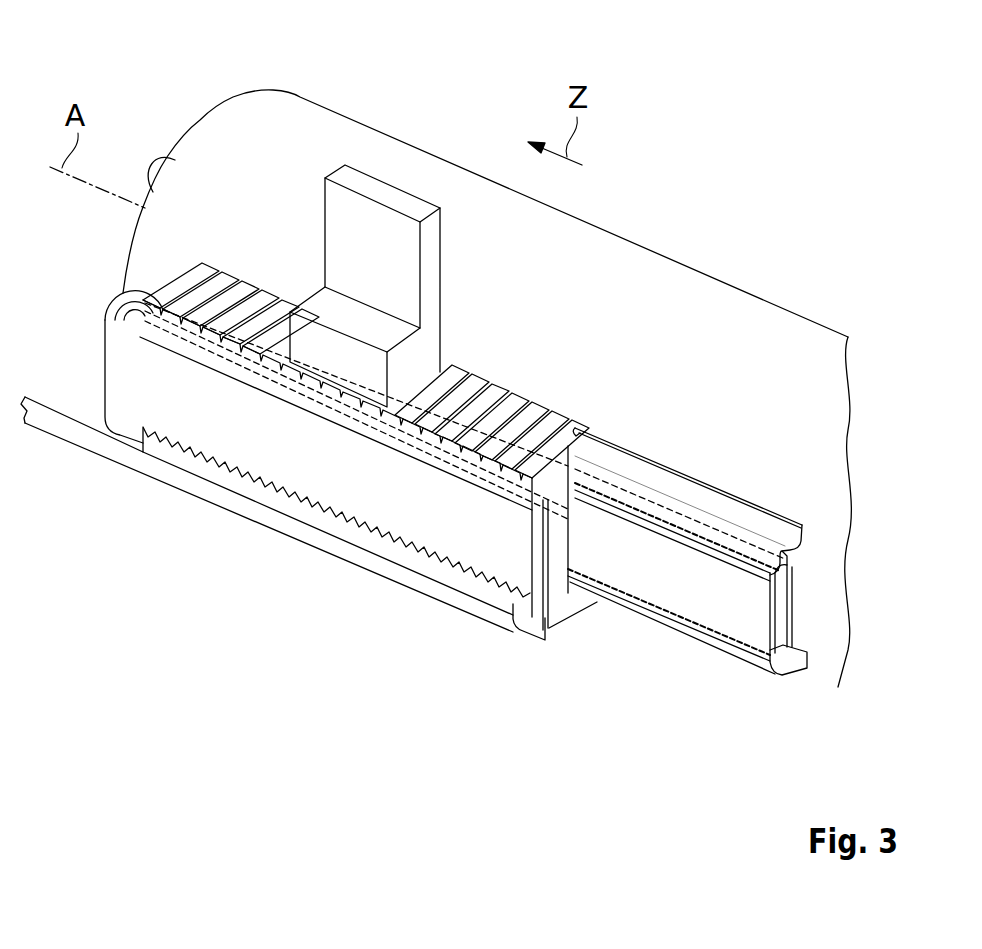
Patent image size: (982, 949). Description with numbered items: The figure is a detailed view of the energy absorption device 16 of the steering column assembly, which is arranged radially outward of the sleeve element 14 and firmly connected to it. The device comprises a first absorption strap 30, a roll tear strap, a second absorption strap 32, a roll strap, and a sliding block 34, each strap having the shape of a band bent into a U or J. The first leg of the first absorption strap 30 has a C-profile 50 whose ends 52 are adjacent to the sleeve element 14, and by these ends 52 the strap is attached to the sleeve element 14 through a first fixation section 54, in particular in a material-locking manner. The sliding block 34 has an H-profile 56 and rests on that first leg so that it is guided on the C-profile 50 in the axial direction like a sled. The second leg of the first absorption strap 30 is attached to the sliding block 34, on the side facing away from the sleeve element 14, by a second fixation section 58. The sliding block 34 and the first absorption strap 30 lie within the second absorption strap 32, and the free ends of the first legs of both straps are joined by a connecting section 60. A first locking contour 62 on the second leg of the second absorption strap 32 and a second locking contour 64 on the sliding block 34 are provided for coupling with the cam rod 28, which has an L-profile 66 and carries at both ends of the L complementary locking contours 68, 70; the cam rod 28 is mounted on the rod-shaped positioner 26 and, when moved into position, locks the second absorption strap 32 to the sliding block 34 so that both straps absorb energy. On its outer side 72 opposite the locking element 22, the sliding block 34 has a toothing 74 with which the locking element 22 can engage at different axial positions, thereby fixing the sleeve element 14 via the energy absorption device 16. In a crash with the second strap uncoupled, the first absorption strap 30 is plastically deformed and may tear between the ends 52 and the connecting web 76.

The sleeve element 14 is at (633, 250).
The energy absorption device 16 is at (703, 675).
The locking element 22 is at (385, 195).
The positioner 26 is at (70, 430).
The cam rod 28 is at (400, 553).
The first absorption strap 30 is at (747, 618).
The second absorption strap 32 is at (270, 453).
The sliding block 34 is at (182, 277).
The C-profile 50 is at (785, 497).
The ends 52 is at (797, 545).
The first fixation section 54 is at (678, 465).
The H-profile 56 is at (563, 543).
The second fixation section 58 is at (222, 360).
The connecting section 60 is at (780, 615).
The first locking contour 62 is at (336, 524).
The second locking contour 64 is at (554, 655).
The L-profile 66 is at (538, 610).
The locking contour 68 is at (333, 517).
The locking contour 70 is at (552, 600).
The outer side 72 is at (366, 249).
The toothing 74 is at (228, 277).
The connecting web 76 is at (787, 560).